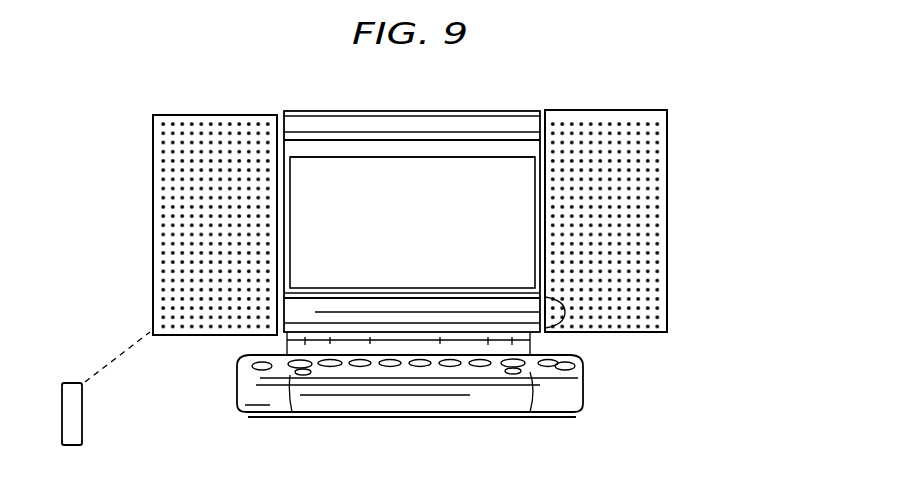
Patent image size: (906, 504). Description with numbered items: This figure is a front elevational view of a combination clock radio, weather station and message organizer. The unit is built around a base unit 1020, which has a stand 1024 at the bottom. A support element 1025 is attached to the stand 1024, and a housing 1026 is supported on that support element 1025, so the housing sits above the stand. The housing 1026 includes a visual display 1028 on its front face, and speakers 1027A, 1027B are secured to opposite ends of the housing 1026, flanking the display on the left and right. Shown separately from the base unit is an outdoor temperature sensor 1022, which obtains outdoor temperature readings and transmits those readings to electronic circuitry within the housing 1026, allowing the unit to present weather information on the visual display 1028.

The base unit 1020 is at (668, 92).
The outdoor temperature sensor 1022 is at (82, 418).
The stand 1024 is at (256, 401).
The support element 1025 is at (300, 348).
The housing 1026 is at (468, 112).
The speaker 1027A is at (220, 114).
The speaker 1027B is at (590, 112).
The visual display 1028 is at (431, 224).